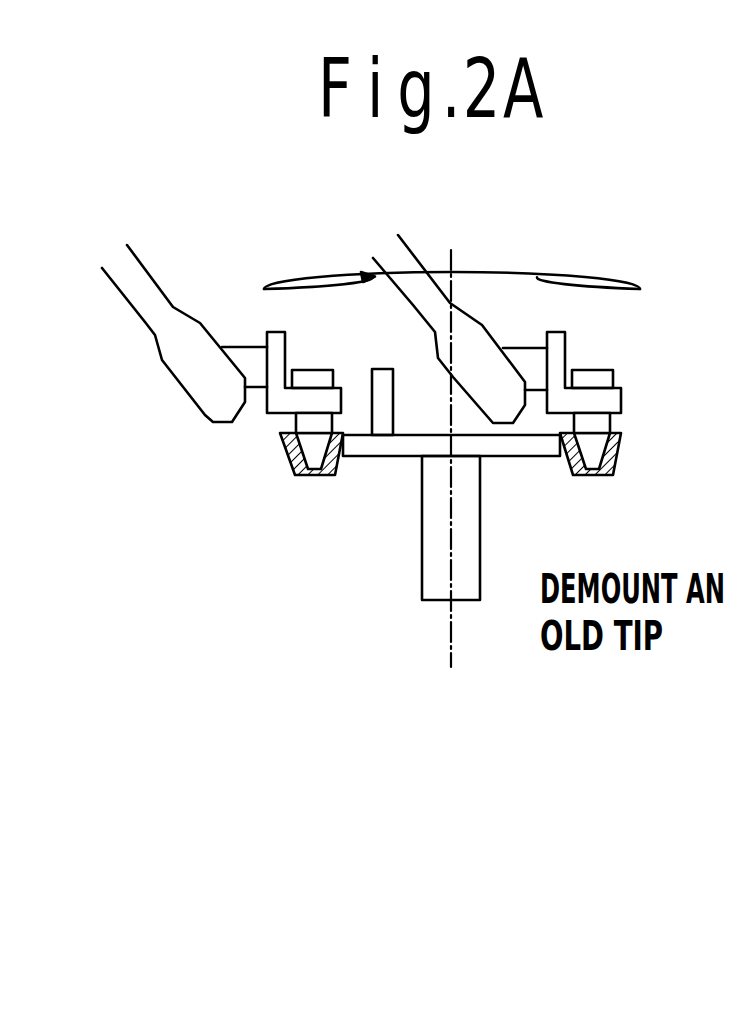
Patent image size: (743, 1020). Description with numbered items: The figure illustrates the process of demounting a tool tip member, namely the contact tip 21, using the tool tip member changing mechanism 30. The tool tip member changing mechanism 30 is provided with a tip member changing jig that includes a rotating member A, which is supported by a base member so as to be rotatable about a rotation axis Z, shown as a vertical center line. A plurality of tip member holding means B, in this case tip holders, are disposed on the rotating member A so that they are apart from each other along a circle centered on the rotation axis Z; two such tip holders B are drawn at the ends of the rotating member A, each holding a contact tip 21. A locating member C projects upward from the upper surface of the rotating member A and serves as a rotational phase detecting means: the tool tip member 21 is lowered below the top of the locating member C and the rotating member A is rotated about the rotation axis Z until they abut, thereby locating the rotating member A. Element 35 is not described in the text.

The holder (L-shaped bracket) 35 is at (282, 427).
The contact tip 21 is at (448, 521).
The tool tip member changing mechanism 30 is at (498, 603).
The rotating member A is at (384, 463).
The tip member holding means B is at (330, 482).
The locating member C is at (380, 365).
The rotation axis Z is at (449, 486).